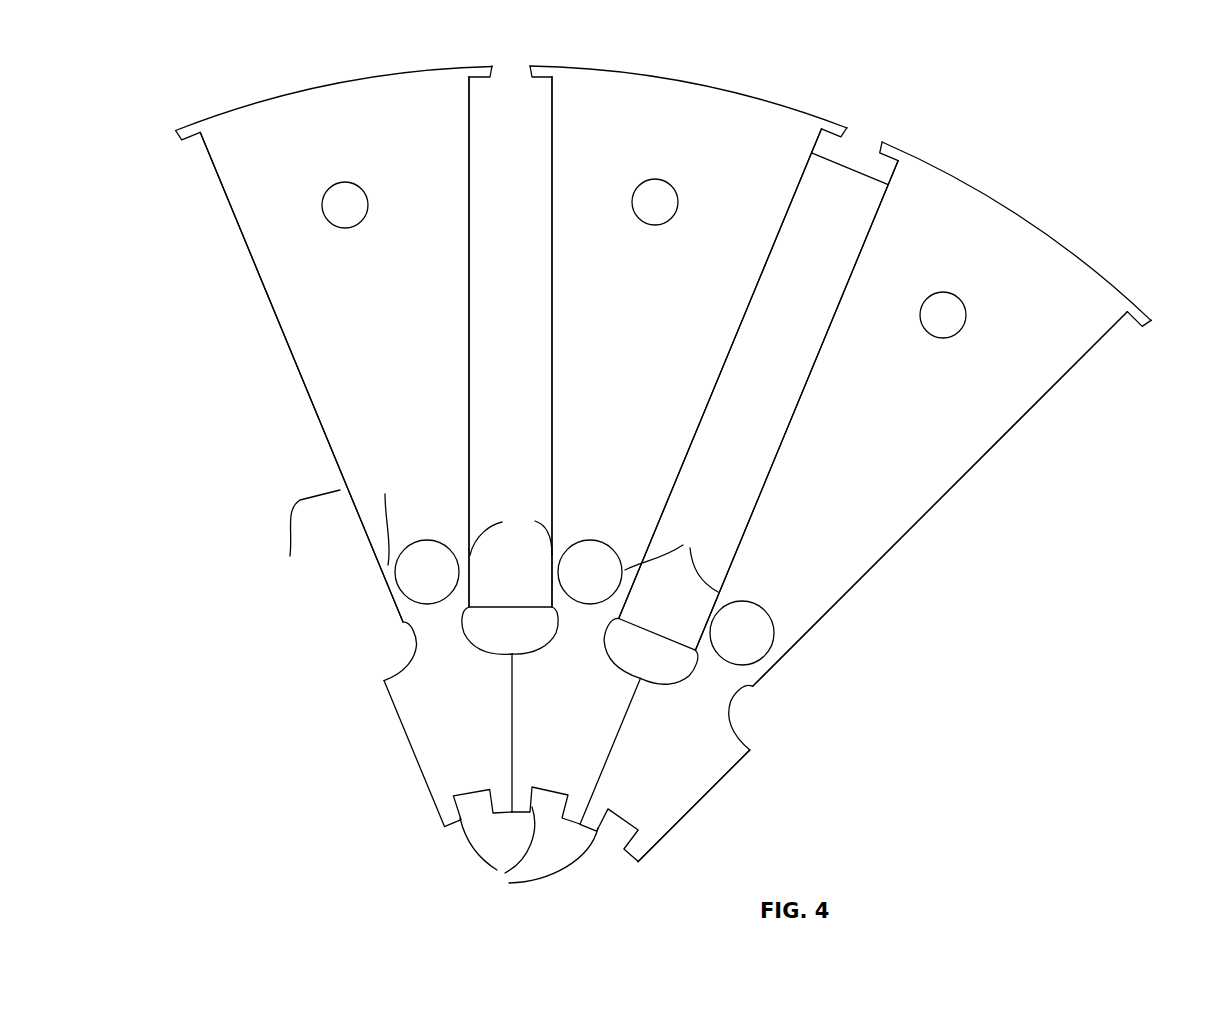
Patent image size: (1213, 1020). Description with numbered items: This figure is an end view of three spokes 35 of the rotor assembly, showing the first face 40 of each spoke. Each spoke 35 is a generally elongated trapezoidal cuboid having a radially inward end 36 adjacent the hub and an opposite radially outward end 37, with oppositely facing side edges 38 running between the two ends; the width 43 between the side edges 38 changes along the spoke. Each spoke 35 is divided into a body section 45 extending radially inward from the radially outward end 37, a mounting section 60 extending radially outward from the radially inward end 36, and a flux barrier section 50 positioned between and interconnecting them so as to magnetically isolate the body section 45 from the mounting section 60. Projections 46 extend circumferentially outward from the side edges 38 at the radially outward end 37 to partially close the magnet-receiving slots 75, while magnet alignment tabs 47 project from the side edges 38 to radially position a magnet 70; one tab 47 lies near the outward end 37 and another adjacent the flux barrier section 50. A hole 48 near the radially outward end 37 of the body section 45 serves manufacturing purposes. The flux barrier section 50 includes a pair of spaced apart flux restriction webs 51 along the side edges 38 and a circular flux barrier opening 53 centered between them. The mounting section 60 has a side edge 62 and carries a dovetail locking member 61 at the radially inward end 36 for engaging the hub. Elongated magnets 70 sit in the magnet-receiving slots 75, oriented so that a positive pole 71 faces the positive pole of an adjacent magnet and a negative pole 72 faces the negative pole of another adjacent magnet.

The spoke 35 is at (318, 400).
The radially inward end 36 is at (425, 840).
The radially outward end 37 is at (288, 86).
The side edge 38 is at (283, 330).
The first face 40 is at (252, 248).
The width 43 is at (306, 535).
The body section 45 is at (1030, 447).
The projection 46 is at (186, 126).
The magnet alignment tab 47 is at (205, 150).
The hole 48 is at (345, 183).
The flux barrier section 50 is at (830, 673).
The flux restriction web 51 is at (544, 529).
The flux barrier opening 53 is at (425, 540).
The mounting section 60 is at (760, 805).
The locking member 61 is at (529, 851).
The side edge 62 is at (410, 750).
The magnet 70 is at (810, 389).
The positive pole 71 is at (752, 300).
The negative pole 72 is at (838, 335).
The magnet-receiving slot 75 is at (535, 155).